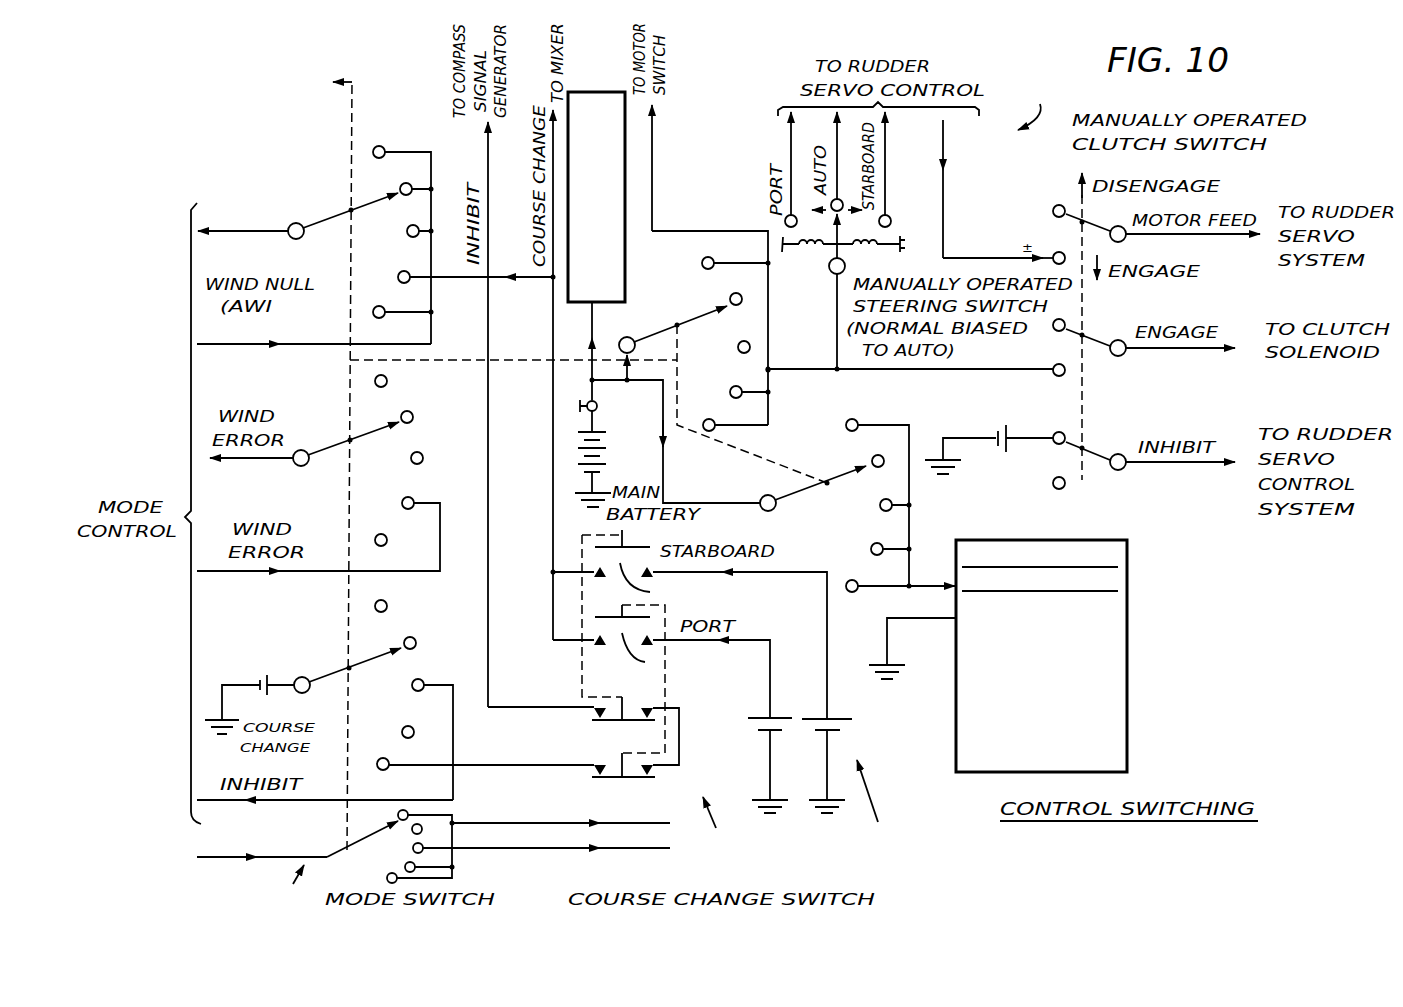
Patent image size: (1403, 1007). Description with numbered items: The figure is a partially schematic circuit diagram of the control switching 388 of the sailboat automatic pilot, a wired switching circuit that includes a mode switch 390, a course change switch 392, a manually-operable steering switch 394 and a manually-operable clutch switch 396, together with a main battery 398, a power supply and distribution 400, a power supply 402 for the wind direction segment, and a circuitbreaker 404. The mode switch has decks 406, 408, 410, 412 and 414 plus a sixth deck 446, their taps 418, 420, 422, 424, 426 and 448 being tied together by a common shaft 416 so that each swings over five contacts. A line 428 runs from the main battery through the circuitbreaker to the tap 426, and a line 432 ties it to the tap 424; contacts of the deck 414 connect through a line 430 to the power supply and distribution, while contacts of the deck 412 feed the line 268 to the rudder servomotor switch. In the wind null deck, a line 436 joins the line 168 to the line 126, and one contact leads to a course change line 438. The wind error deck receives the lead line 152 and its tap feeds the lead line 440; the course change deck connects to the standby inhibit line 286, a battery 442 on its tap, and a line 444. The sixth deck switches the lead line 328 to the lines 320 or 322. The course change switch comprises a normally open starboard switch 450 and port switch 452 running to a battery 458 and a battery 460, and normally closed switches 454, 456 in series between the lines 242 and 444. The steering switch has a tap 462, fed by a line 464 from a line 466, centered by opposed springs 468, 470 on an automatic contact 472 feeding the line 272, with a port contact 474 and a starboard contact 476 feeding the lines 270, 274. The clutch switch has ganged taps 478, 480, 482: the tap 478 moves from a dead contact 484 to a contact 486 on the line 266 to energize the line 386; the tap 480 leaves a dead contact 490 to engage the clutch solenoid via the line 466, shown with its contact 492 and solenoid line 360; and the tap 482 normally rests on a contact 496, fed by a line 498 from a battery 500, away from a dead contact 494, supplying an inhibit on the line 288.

The line 126 is at (254, 231).
The line 168 is at (324, 345).
The lead line 152 is at (312, 575).
The line 286 is at (323, 798).
The lead line 328 is at (308, 856).
The mode switch 390 is at (272, 881).
The line 320 is at (538, 822).
The line 322 is at (508, 852).
The line 242 is at (486, 148).
The line 436 is at (432, 298).
The course change line 438 is at (551, 322).
The common shaft 416 is at (349, 630).
The tap 418 is at (330, 221).
The deck 406 is at (360, 245).
The tap 420 is at (328, 445).
The deck 408 is at (358, 461).
The lead line 440 is at (254, 461).
The battery 442 is at (263, 667).
The tap 422 is at (332, 678).
The deck 410 is at (373, 700).
The sixth deck 446 is at (378, 839).
The tap 448 is at (372, 826).
The line 444 is at (510, 762).
The normally open starboard switch 450 is at (636, 580).
The normally open port switch 452 is at (640, 672).
The normally closed starboard switch 454 is at (599, 726).
The normally closed port switch 456 is at (630, 780).
The power supply 402 is at (594, 96).
The circuitbreaker 404 is at (587, 400).
The main battery 398 is at (622, 424).
The line 428 is at (577, 486).
The line 432 is at (629, 376).
The tap 424 is at (654, 340).
The deck 412 is at (693, 345).
The tap 426 is at (841, 521).
The deck 414 is at (834, 506).
The line 430 is at (911, 524).
The battery 460 is at (755, 721).
The battery 458 is at (850, 722).
The control switching 388 is at (888, 791).
The course change switch 392 is at (719, 825).
The power supply and distribution 400 is at (1127, 663).
The line 268 is at (652, 166).
The line 270 is at (787, 134).
The line 272 is at (836, 138).
The line 274 is at (893, 136).
The line 266 is at (943, 133).
The manually-operable steering switch 394 is at (1027, 105).
The port contact 474 is at (784, 230).
The automatic contact 472 is at (819, 219).
The tap 462 is at (840, 231).
The starboard contact 476 is at (888, 218).
The spring 468 is at (811, 251).
The spring 470 is at (875, 266).
The line 464 is at (836, 358).
The line 466 is at (807, 374).
The dead contact 484 is at (1054, 205).
The tap 478 is at (1055, 222).
The contact 486 is at (1063, 246).
The line 386 is at (1222, 236).
The dead contact 490 is at (1070, 324).
The tap 480 is at (1066, 338).
The engage contact 492 is at (1071, 376).
The clutch solenoid lead 360 is at (1178, 352).
The line 498 is at (1022, 426).
The battery 500 is at (994, 434).
The contact 496 is at (1062, 432).
The dead contact 494 is at (1033, 484).
The tap 482 is at (1110, 468).
The line 288 is at (1183, 466).
The manually-operable clutch switch 396 is at (1084, 490).